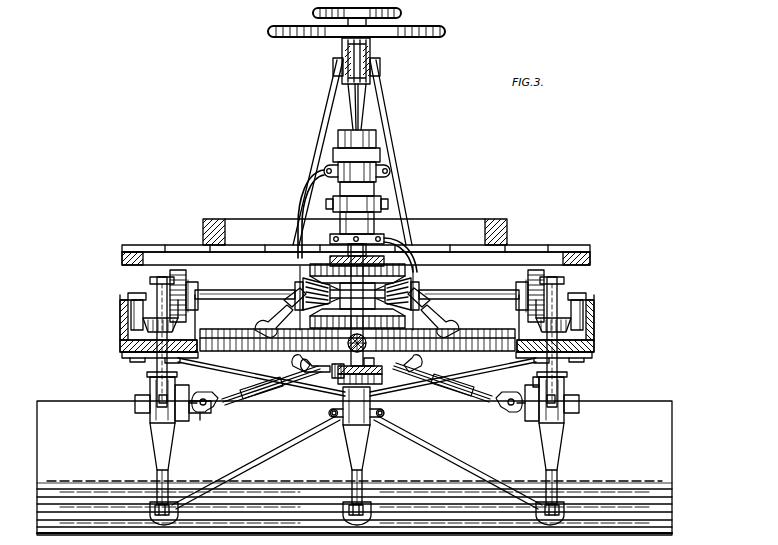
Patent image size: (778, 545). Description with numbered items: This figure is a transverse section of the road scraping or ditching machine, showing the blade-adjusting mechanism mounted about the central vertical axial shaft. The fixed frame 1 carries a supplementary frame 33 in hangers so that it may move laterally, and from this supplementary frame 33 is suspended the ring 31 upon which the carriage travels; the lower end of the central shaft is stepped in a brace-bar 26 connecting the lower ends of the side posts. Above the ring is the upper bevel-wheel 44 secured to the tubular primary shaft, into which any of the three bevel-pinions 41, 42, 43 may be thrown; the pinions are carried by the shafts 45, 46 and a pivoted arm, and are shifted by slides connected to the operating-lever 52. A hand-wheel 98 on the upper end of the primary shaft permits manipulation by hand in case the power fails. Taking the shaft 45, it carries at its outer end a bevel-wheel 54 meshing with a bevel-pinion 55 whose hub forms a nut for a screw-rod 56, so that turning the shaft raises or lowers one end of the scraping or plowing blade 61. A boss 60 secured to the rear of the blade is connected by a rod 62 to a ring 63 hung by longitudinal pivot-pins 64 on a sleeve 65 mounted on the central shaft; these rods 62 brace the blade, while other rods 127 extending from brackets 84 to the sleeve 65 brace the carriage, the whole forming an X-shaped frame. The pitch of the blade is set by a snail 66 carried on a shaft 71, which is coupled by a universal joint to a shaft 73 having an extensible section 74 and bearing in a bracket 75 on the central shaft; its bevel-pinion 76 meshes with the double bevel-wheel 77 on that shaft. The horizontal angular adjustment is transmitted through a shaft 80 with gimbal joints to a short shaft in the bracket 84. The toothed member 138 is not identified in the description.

The fixed frame 1 is at (355, 224).
The brace-bar 26 is at (265, 504).
The ring 31 is at (120, 328).
The supplementary frame 33 is at (120, 256).
The bevel-pinion 41 is at (298, 283).
The bevel-pinion 42 is at (418, 284).
The bevel-pinion 43 is at (366, 300).
The bevel-wheel 44 is at (300, 256).
The shaft 45 is at (245, 288).
The shaft 46 is at (469, 288).
The operating-lever 52 is at (370, 52).
The bevel-wheel 54 is at (187, 274).
The bevel-pinion 55 is at (155, 316).
The screw-rod 56 is at (157, 279).
The boss 60 is at (150, 505).
The scraping or plowing blade 61 is at (354, 468).
The rod 62 is at (262, 459).
The ring 63 is at (334, 417).
The pivot-pin 64 is at (380, 417).
The sleeve 65 is at (342, 400).
The snail 66 is at (180, 393).
The shaft 71 is at (200, 414).
The shaft 73 is at (220, 402).
The extensible section 74 is at (275, 384).
The bracket 75 is at (316, 372).
The bevel-pinion 76 is at (343, 365).
The double bevel-wheel 77 is at (376, 366).
The shaft 80 is at (280, 309).
The bracket 84 is at (533, 378).
The hand-wheel 98 is at (318, 12).
The rod 127 is at (357, 376).
The rack 138 is at (312, 331).